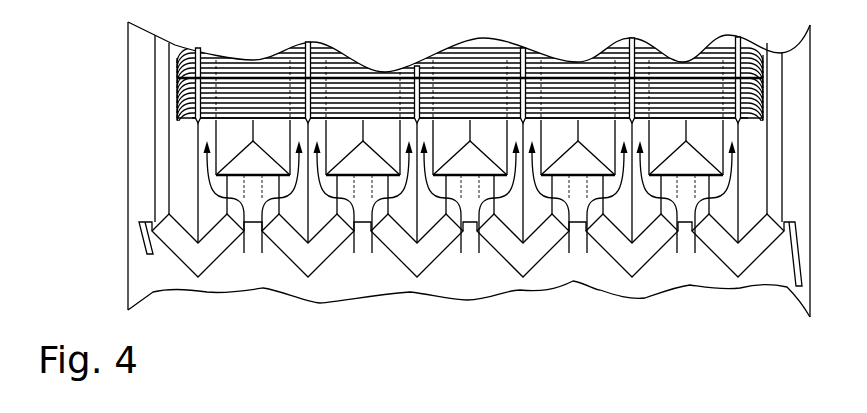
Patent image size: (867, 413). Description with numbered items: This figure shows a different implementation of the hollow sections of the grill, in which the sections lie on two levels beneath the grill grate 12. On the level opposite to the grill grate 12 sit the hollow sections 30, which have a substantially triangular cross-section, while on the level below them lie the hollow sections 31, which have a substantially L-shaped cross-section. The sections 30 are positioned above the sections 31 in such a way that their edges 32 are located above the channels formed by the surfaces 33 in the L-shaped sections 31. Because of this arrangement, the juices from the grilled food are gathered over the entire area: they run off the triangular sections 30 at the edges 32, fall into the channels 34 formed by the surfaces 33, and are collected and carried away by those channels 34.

The grill grate 12 is at (174, 71).
The hollow sections 30 is at (252, 178).
The hollow sections 31 is at (336, 216).
The edges 32 is at (326, 178).
The surfaces 33 is at (433, 225).
The channels 34 is at (528, 208).